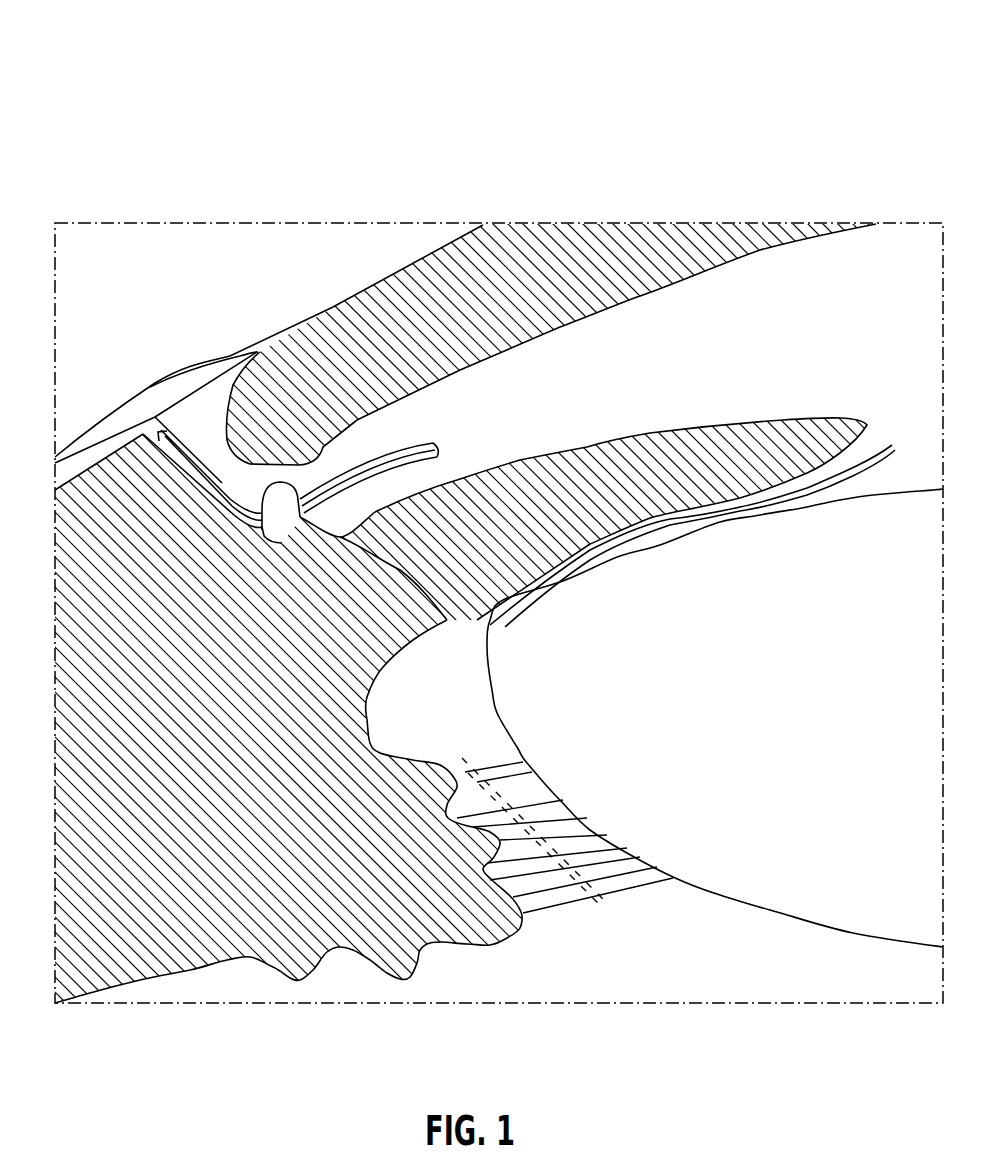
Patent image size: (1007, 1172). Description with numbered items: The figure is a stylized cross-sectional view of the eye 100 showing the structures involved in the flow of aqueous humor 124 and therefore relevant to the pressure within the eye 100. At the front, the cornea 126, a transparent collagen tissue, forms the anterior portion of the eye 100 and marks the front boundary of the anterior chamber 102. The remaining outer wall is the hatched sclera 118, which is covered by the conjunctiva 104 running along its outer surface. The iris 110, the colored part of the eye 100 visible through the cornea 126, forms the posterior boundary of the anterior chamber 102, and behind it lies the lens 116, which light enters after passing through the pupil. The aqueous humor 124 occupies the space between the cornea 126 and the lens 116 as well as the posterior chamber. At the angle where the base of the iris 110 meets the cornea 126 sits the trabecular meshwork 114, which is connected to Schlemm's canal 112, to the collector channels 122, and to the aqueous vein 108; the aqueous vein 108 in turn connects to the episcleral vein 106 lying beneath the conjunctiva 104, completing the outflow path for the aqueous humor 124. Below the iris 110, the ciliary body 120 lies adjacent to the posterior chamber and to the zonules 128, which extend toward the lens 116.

The eye 100 is at (837, 80).
The anterior chamber 102 is at (783, 379).
The conjunctiva 104 is at (255, 343).
The episcleral vein 106 is at (153, 412).
The aqueous vein 108 is at (170, 457).
The iris 110 is at (620, 522).
The Schlemm's canal 112 is at (285, 537).
The trabecular meshwork 114 is at (447, 620).
The lens 116 is at (857, 849).
The sclera 118 is at (169, 783).
The ciliary body 120 is at (384, 919).
The collector channels 122 is at (225, 480).
The aqueous humor 124 is at (425, 447).
The cornea 126 is at (637, 240).
The zonules 128 is at (623, 893).